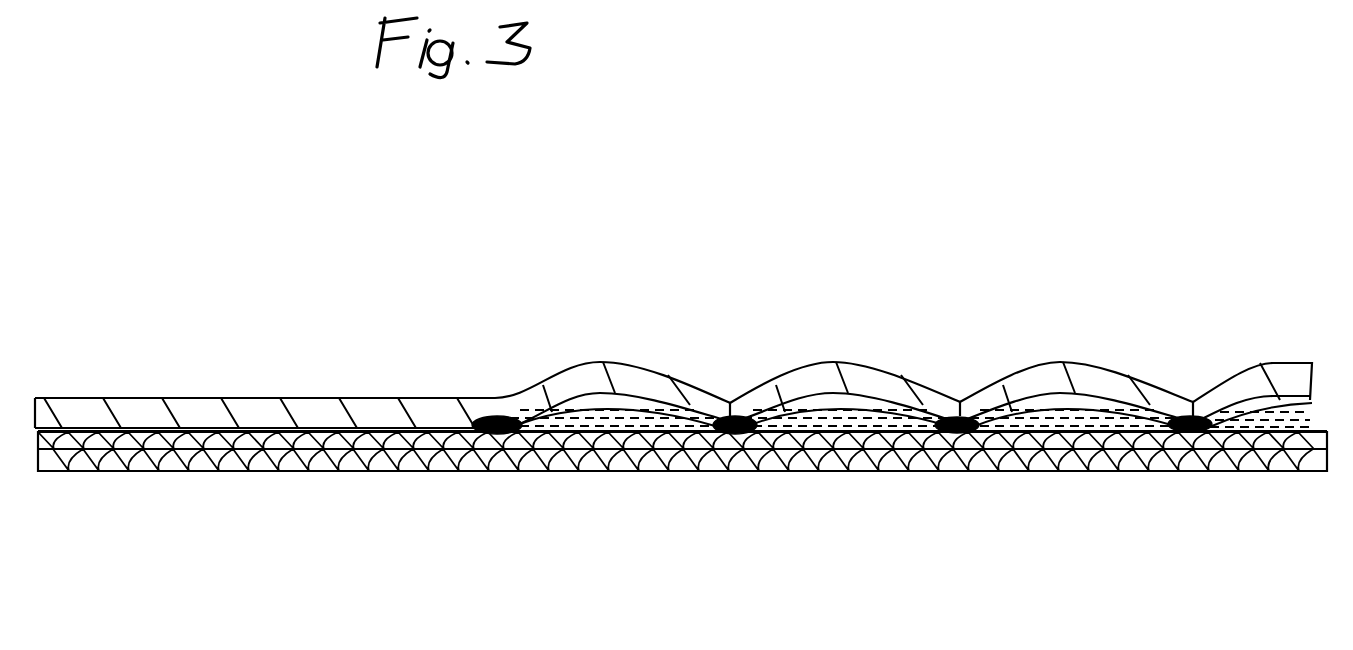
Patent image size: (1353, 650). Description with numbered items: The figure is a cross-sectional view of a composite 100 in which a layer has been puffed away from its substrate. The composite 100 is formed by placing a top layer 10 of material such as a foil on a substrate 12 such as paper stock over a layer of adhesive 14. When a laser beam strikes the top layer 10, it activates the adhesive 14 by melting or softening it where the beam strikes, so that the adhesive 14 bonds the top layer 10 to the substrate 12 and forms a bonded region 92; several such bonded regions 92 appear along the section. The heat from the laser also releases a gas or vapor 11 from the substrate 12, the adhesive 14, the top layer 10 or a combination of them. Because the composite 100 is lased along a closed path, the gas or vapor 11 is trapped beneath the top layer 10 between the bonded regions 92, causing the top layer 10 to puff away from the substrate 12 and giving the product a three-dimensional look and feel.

The composite 100 is at (848, 246).
The top layer 10 is at (1075, 378).
The gas or vapor 11 is at (613, 432).
The substrate 12 is at (1160, 477).
The adhesive 14 is at (853, 398).
The bonded region 92 is at (500, 417).